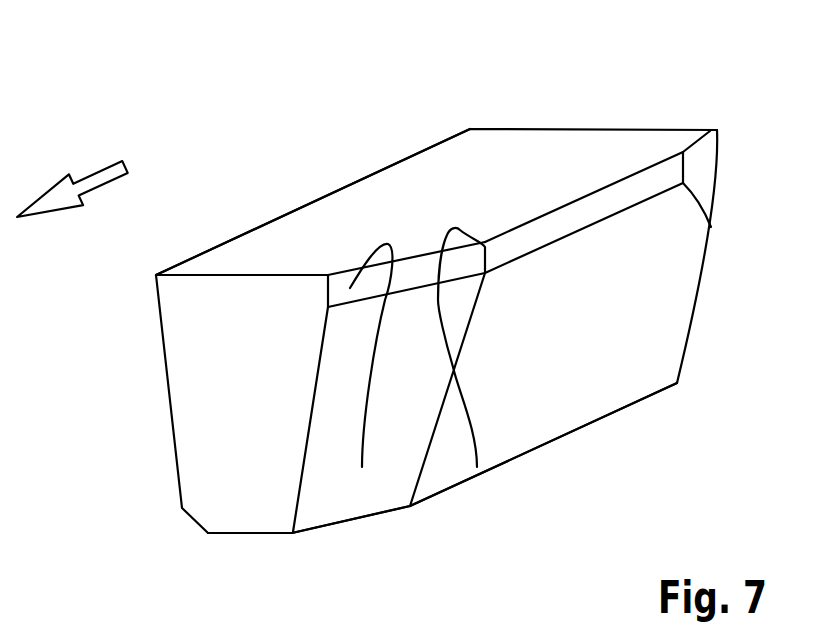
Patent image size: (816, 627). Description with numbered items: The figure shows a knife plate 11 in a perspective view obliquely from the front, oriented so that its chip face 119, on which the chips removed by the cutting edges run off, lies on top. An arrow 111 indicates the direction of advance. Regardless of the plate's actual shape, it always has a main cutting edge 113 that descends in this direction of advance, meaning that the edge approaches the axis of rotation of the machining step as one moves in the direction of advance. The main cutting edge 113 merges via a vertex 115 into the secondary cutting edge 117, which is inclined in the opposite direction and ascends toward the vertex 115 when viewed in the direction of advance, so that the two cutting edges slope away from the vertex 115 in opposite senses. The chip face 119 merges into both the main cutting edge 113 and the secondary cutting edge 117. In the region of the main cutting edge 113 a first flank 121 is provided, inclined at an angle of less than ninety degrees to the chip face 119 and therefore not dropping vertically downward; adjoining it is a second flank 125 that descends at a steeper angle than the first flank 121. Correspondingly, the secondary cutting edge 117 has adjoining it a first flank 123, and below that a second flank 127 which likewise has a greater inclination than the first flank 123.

The knife plate 11 is at (410, 111).
The arrow 111 is at (95, 180).
The main cutting edge 113 is at (362, 467).
The vertex 115 is at (477, 467).
The secondary cutting edge 117 is at (622, 183).
The chip face 119 is at (311, 234).
The first flank 121 is at (352, 289).
The first flank 123 is at (600, 207).
The second flank 125 is at (318, 515).
The second flank 127 is at (590, 413).